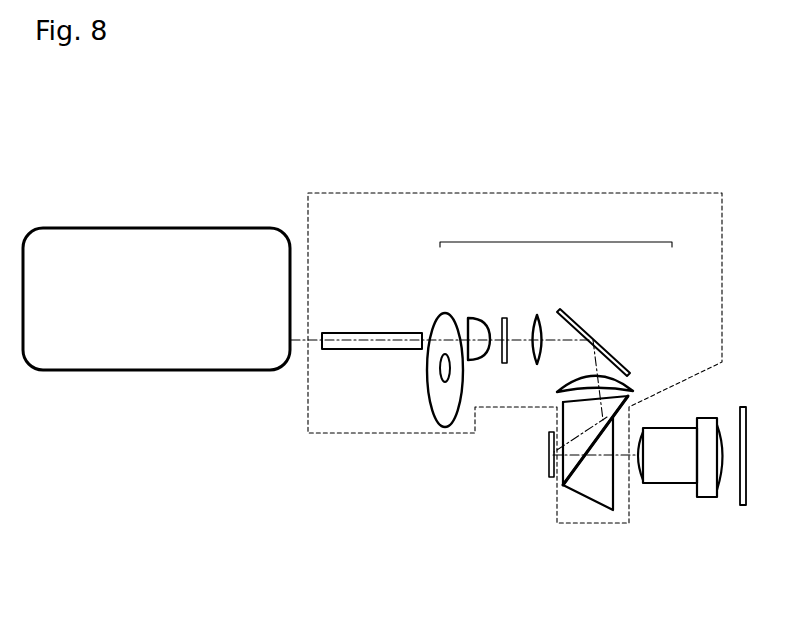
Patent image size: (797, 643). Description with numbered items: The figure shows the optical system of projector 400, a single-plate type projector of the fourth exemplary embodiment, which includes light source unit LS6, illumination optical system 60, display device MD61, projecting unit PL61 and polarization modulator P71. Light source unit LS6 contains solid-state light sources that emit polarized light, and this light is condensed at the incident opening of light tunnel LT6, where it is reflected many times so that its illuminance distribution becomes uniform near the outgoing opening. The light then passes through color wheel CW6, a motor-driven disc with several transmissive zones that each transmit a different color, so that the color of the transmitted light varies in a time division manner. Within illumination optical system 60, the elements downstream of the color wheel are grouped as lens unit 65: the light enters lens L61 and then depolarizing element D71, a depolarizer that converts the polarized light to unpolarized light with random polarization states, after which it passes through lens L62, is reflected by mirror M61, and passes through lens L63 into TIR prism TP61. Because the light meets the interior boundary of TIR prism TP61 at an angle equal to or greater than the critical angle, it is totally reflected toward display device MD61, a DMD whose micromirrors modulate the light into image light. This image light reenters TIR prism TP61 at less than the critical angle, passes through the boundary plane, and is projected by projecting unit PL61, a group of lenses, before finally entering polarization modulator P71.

The light source unit LS6 is at (155, 228).
The illumination optical system 60 is at (405, 192).
The projector 400 is at (608, 136).
The lens unit 65 is at (556, 242).
The light tunnel LT6 is at (368, 327).
The color wheel CW6 is at (427, 322).
The lens L61 is at (470, 320).
The depolarizing element D71 is at (509, 366).
The lens L62 is at (536, 317).
The mirror M61 is at (578, 323).
The lens L63 is at (634, 380).
The TIR prism TP61 is at (590, 500).
The display device MD61 is at (548, 453).
The projecting unit PL61 is at (703, 415).
The polarization modulator P71 is at (742, 507).